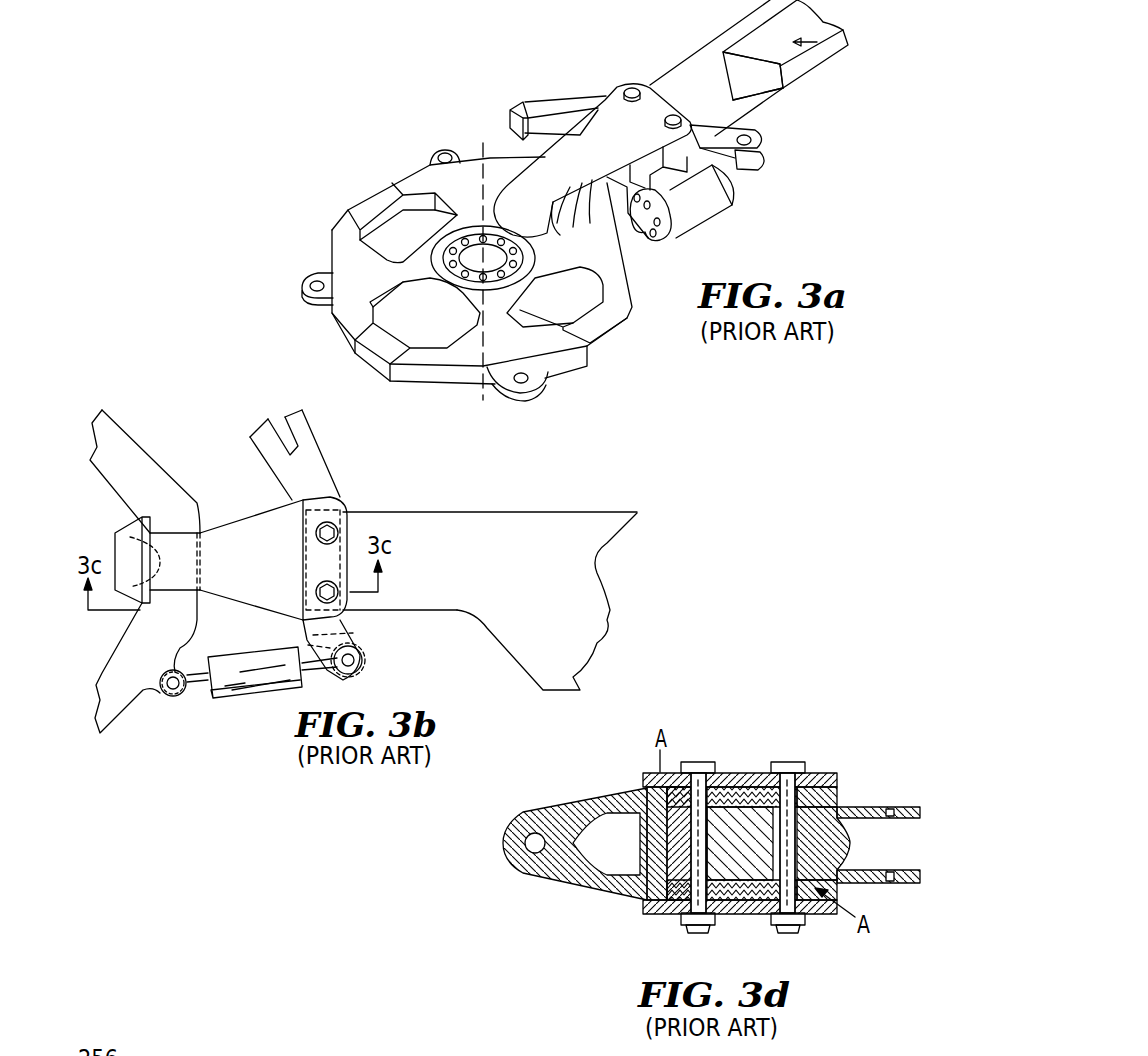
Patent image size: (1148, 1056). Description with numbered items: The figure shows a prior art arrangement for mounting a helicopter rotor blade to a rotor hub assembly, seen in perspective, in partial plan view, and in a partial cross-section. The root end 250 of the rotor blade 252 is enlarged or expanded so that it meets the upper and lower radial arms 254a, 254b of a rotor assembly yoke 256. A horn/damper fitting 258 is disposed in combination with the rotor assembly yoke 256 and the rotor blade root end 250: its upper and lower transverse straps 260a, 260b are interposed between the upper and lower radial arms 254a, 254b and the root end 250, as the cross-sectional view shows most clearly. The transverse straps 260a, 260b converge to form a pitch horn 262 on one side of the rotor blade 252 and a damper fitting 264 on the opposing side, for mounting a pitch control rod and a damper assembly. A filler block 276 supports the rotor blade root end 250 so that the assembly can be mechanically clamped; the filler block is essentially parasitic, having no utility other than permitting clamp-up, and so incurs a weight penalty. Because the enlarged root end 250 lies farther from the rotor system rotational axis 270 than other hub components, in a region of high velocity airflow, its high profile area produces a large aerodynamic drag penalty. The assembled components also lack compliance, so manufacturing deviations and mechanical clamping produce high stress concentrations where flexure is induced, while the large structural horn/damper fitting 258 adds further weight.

In FIG. 3A, the root end 250 is at (720, 96).
In FIG. 3B, the root end 250 is at (363, 528).
In FIG. 3D, the root end 250 is at (817, 810).
In FIG. 3A, the rotor blade 252 is at (832, 42).
In FIG. 3B, the rotor blade 252 is at (543, 594).
In FIG. 3A, the upper radial arm 254a is at (608, 95).
In FIG. 3B, the upper radial arm 254a is at (268, 518).
In FIG. 3D, the upper radial arm 254a is at (813, 772).
In FIG. 3D, the lower radial arm 254b is at (655, 914).
In FIG. 3B, the rotor assembly yoke 256 is at (225, 520).
In FIG. 3A, the horn/damper fitting 258 is at (703, 134).
In FIG. 3B, the horn/damper fitting 258 is at (338, 481).
In FIG. 3D, the horn/damper fitting 258 is at (640, 792).
In FIG. 3D, the upper transverse strap 260a is at (743, 790).
In FIG. 3D, the lower transverse strap 260b is at (757, 907).
In FIG. 3A, the pitch horn 262 is at (540, 108).
In FIG. 3B, the pitch horn 262 is at (290, 430).
In FIG. 3D, the pitch horn 262 is at (556, 808).
In FIG. 3A, the damper fitting 264 is at (758, 167).
In FIG. 3B, the damper fitting 264 is at (358, 645).
In FIG. 3D, the damper fitting 264 is at (907, 807).
In FIG. 3A, the rotor system rotational axis 270 is at (483, 152).
In FIG. 3D, the filler block 276 is at (717, 812).